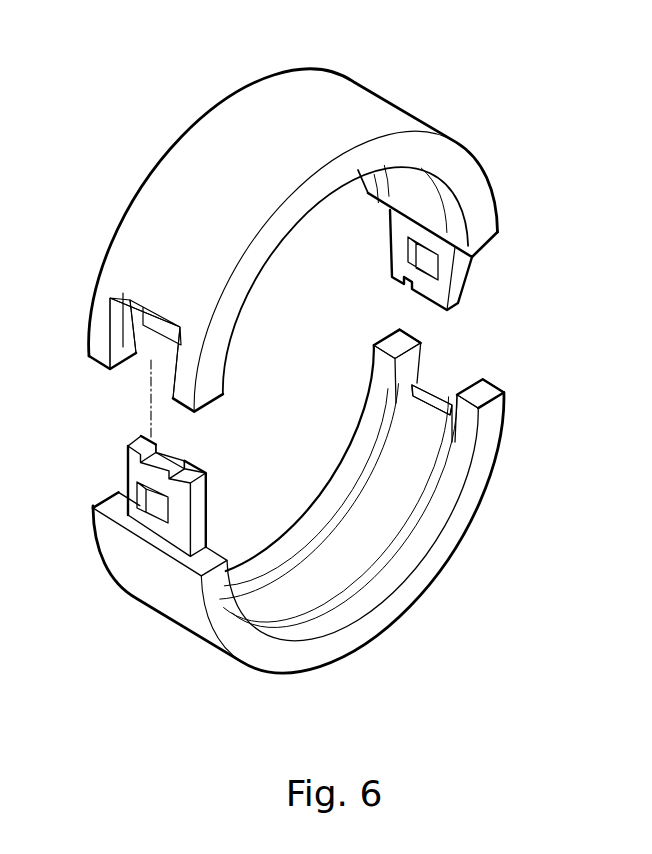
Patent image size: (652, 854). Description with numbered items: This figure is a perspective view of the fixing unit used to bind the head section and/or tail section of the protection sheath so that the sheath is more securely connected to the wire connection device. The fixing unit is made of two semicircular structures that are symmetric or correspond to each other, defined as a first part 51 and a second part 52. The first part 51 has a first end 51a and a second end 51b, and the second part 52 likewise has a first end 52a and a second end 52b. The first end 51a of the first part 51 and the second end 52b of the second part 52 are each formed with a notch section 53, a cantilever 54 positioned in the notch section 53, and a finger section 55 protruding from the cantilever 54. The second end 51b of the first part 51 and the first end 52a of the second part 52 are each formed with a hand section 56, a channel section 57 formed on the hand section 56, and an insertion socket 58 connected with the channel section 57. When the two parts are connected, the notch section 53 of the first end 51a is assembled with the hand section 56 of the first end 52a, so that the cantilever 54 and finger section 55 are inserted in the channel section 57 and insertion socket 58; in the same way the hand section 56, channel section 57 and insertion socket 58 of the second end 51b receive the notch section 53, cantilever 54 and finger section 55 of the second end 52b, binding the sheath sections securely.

The first part 51 is at (228, 96).
The first end 51a is at (130, 252).
The second end 51b is at (495, 201).
The second part 52 is at (360, 648).
The first end 52a is at (160, 572).
The second end 52b is at (505, 456).
The notch section 53 is at (140, 373).
The cantilever 54 is at (162, 322).
The finger section 55 is at (134, 348).
The hand section 56 is at (478, 276).
The channel section 57 is at (420, 292).
The insertion socket 58 is at (412, 258).